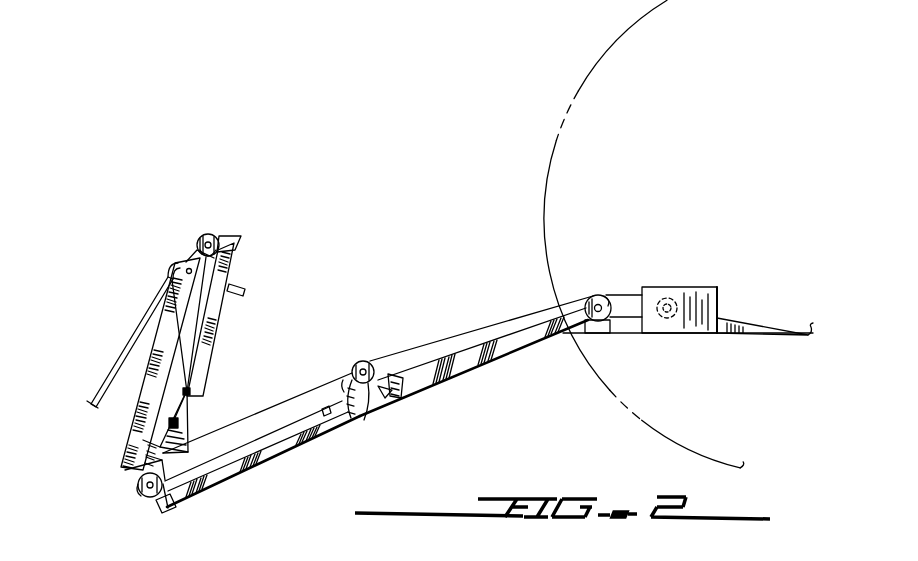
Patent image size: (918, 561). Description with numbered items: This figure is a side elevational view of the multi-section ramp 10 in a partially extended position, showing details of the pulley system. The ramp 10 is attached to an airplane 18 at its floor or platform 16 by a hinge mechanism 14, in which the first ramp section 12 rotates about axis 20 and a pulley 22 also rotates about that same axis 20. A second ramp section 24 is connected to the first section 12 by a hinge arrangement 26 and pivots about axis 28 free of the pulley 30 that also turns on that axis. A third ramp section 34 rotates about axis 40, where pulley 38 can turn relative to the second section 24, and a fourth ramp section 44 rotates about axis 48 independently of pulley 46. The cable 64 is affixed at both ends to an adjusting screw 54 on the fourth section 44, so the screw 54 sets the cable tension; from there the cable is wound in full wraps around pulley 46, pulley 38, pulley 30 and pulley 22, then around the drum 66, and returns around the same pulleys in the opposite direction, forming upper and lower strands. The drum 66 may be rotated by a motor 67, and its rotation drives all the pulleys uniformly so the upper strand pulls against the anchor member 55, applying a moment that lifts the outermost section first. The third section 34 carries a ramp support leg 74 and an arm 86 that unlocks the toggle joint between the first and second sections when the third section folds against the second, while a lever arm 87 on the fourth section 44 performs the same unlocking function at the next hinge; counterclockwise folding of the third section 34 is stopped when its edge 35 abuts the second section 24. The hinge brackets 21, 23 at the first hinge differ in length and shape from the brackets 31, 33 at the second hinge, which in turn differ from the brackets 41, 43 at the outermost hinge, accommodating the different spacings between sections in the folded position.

The ramp 10 is at (347, 292).
The first ramp section 12 is at (472, 362).
The hinge mechanism 14 is at (603, 334).
The floor or platform 16 is at (755, 333).
The airplane 18 is at (545, 163).
The axis 20 is at (590, 297).
The hinge bracket 21 is at (395, 395).
The pulley 22 is at (604, 298).
The hinge bracket 23 is at (345, 395).
The second ramp section 24 is at (302, 443).
The hinge arrangement 26 is at (415, 380).
The axis 28 is at (365, 426).
The pulley 30 is at (363, 360).
The hinge bracket 31 is at (173, 506).
The hinge bracket 33 is at (125, 470).
The third ramp section 34 is at (142, 410).
The edge 35 is at (130, 482).
The pulley 38 is at (140, 488).
The axis 40 is at (150, 494).
The hinge bracket 41 is at (186, 252).
The hinge bracket 43 is at (243, 236).
The fourth ramp section 44 is at (214, 340).
The pulley 46 is at (210, 233).
The axis 48 is at (222, 240).
The adjusting screw 54 is at (186, 426).
The anchor member 55 is at (189, 396).
The cable 64 is at (274, 432).
The drum 66 is at (668, 300).
The motor 67 is at (718, 303).
The ramp support leg 74 is at (120, 352).
The arm 86 is at (245, 288).
The lever arm 87 is at (132, 448).